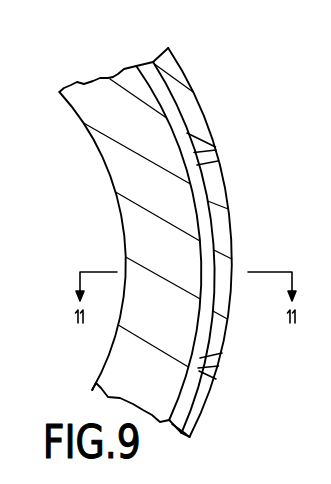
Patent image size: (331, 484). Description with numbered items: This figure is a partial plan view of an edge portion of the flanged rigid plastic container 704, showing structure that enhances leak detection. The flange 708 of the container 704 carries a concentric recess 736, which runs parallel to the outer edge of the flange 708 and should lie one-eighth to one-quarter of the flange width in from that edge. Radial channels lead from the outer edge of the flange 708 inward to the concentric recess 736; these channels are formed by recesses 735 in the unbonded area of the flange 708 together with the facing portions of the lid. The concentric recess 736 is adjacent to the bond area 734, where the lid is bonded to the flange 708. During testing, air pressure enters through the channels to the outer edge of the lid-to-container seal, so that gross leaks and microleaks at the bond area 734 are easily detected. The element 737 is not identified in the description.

The rigid plastic container 704 is at (199, 438).
The flange 708 is at (120, 72).
The bond area 734 is at (113, 155).
The recesses 735 is at (213, 148).
The concentric recess 736 is at (203, 217).
The flange 737 is at (185, 103).